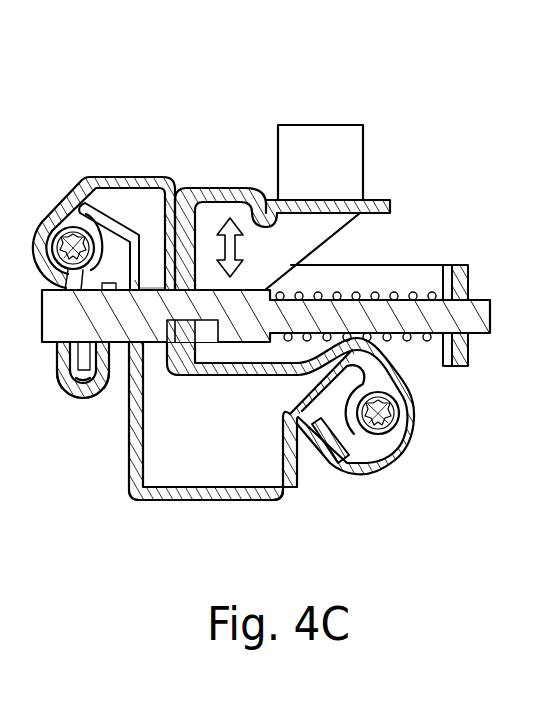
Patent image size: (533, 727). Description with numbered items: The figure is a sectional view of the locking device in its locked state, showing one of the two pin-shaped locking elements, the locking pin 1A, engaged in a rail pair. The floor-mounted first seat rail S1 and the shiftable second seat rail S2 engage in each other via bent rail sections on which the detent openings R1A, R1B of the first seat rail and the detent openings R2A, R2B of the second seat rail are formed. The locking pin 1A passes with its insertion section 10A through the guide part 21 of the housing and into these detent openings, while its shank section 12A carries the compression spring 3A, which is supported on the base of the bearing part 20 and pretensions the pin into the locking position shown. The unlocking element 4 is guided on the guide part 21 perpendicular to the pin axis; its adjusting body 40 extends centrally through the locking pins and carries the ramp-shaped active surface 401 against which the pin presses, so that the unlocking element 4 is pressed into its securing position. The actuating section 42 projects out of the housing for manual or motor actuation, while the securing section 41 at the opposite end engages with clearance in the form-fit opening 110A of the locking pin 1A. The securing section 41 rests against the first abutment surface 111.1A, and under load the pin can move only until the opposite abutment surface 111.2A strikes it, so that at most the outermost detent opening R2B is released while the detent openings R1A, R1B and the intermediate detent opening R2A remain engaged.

The locking pin 1A is at (266, 363).
The compression spring 3A is at (413, 292).
The unlocking element 4 is at (266, 363).
The insertion section 10A is at (58, 228).
The shank section 12A is at (457, 337).
The bearing part 20 is at (266, 363).
The guide part 21 is at (378, 203).
The adjusting body 40 is at (354, 251).
The securing section 41 is at (212, 345).
The actuating section 42 is at (354, 140).
The form-fit opening 110A is at (232, 200).
The first abutment surface 111.1A is at (275, 500).
The opposite abutment surface 111.2A is at (148, 287).
The ramp-shaped active surface 401 is at (336, 234).
The first seat rail S1 is at (272, 504).
The second seat rail S2 is at (157, 255).
The detent opening R1A is at (147, 292).
The detent opening R1B is at (90, 400).
The intermediate detent opening R2A is at (111, 348).
The outermost detent opening R2B is at (60, 394).